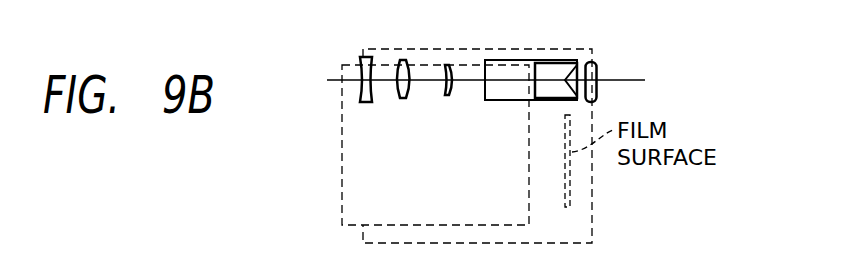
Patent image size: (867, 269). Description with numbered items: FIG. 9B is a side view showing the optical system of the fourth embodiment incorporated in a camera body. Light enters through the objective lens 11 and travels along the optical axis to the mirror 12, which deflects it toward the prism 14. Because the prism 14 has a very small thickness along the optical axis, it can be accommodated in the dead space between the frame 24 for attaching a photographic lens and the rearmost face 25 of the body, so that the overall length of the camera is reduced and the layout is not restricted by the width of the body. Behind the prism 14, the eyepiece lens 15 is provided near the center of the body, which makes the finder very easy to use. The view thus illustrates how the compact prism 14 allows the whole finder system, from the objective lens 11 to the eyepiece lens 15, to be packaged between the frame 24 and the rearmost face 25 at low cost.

The objective lens 11 is at (452, 43).
The mirror 12 is at (504, 59).
The prism 14 is at (547, 91).
The eyepiece lens 15 is at (598, 72).
The frame for attaching a photographic lens 24 is at (339, 105).
The rearmost face of the body 25 is at (594, 223).